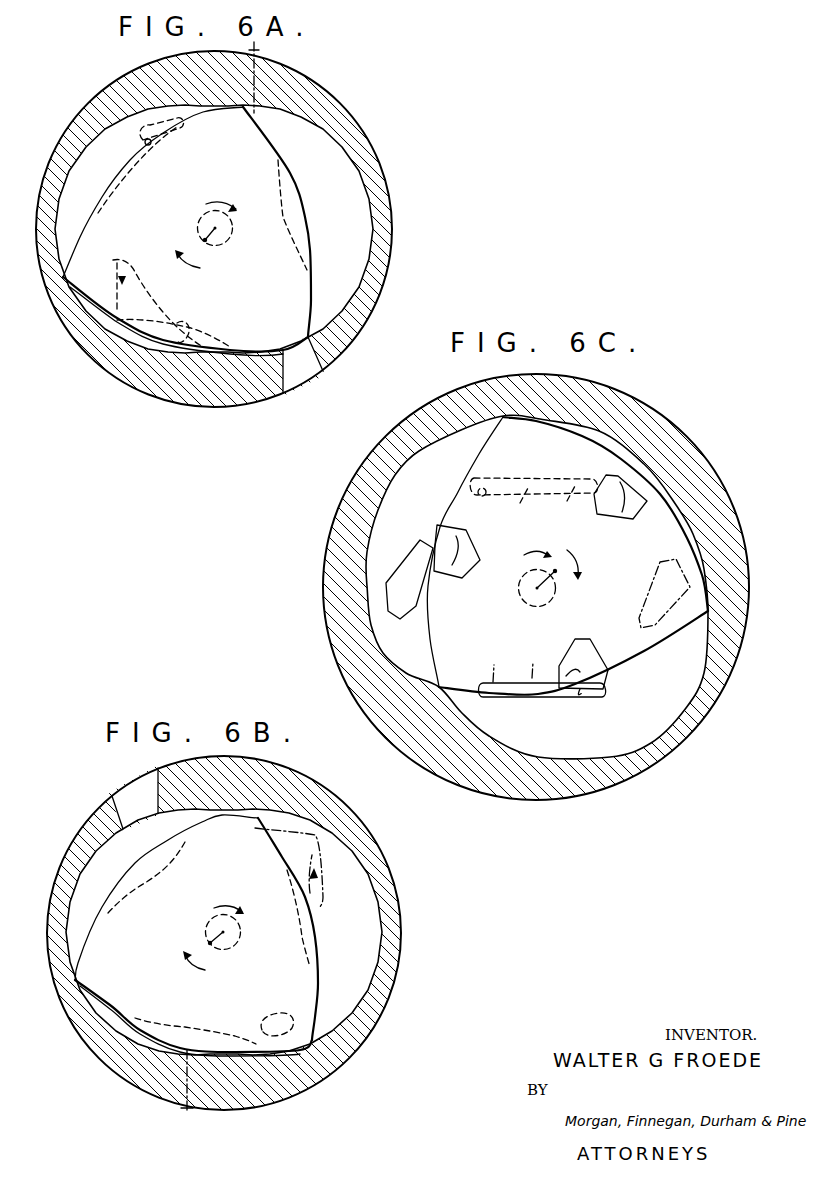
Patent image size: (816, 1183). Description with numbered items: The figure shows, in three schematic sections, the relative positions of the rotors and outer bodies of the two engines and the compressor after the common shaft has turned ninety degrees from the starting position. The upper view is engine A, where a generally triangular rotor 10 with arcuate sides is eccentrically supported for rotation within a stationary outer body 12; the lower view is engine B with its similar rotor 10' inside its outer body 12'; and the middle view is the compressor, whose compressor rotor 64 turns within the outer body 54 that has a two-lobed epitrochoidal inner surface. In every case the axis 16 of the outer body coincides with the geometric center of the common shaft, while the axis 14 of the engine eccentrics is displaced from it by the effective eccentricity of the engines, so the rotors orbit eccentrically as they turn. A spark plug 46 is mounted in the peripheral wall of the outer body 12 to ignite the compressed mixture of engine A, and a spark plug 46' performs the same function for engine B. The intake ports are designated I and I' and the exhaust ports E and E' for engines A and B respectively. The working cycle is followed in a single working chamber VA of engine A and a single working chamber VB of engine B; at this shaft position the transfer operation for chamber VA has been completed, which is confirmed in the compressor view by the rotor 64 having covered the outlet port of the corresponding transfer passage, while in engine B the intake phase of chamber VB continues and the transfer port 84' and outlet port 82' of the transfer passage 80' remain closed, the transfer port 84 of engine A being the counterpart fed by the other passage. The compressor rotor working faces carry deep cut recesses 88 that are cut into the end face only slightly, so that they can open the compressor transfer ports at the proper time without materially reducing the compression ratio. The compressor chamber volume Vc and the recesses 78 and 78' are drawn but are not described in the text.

In FIG. 6A, the rotor 10 is at (187, 231).
In FIG. 6B, the rotor 10' is at (196, 935).
In FIG. 6A, the outer body 12 is at (214, 229).
In FIG. 6B, the outer body 12' is at (224, 933).
In FIG. 6A, the axis of the engine eccentrics 14 is at (205, 240).
In FIG. 6B, the axis of the engine eccentrics 14 is at (210, 943).
In FIG. 6C, the axis of the engine eccentrics 14 is at (555, 571).
In FIG. 6A, the axis of the outer body 16 is at (215, 228).
In FIG. 6B, the axis of the outer body 16 is at (223, 932).
In FIG. 6C, the axis of the outer body 16 is at (537, 588).
In FIG. 6A, the spark plug 46 is at (288, 77).
In FIG. 6B, the spark plug 46' is at (159, 1089).
In FIG. 6A, the inlet or transfer port 84 is at (138, 142).
In FIG. 6C, the inlet or transfer port 84 is at (533, 474).
In FIG. 6B, the inlet or transfer port 84' is at (268, 1013).
In FIG. 6C, the inlet or transfer port 84' is at (560, 696).
In FIG. 6A, the exhaust port E is at (305, 366).
In FIG. 6B, the exhaust port E' is at (129, 798).
In FIG. 6A, the intake port I is at (162, 289).
In FIG. 6B, the intake port I' is at (295, 882).
In FIG. 6A, the working chamber VA is at (87, 178).
In FIG. 6B, the working chamber VB is at (362, 956).
In FIG. 6C, the compression chamber volume Vc is at (562, 438).
In FIG. 6C, the outer body 54 is at (644, 407).
In FIG. 6C, the compressor rotor 64 is at (645, 556).
In FIG. 6C, the combustion chamber recess 78 is at (412, 560).
In FIG. 6C, the combustion chamber recess 78' is at (642, 593).
In FIG. 6C, the transfer passage 80' is at (512, 583).
In FIG. 6C, the outlet port 82' is at (517, 584).
In FIG. 6C, the recesses 88 is at (540, 582).